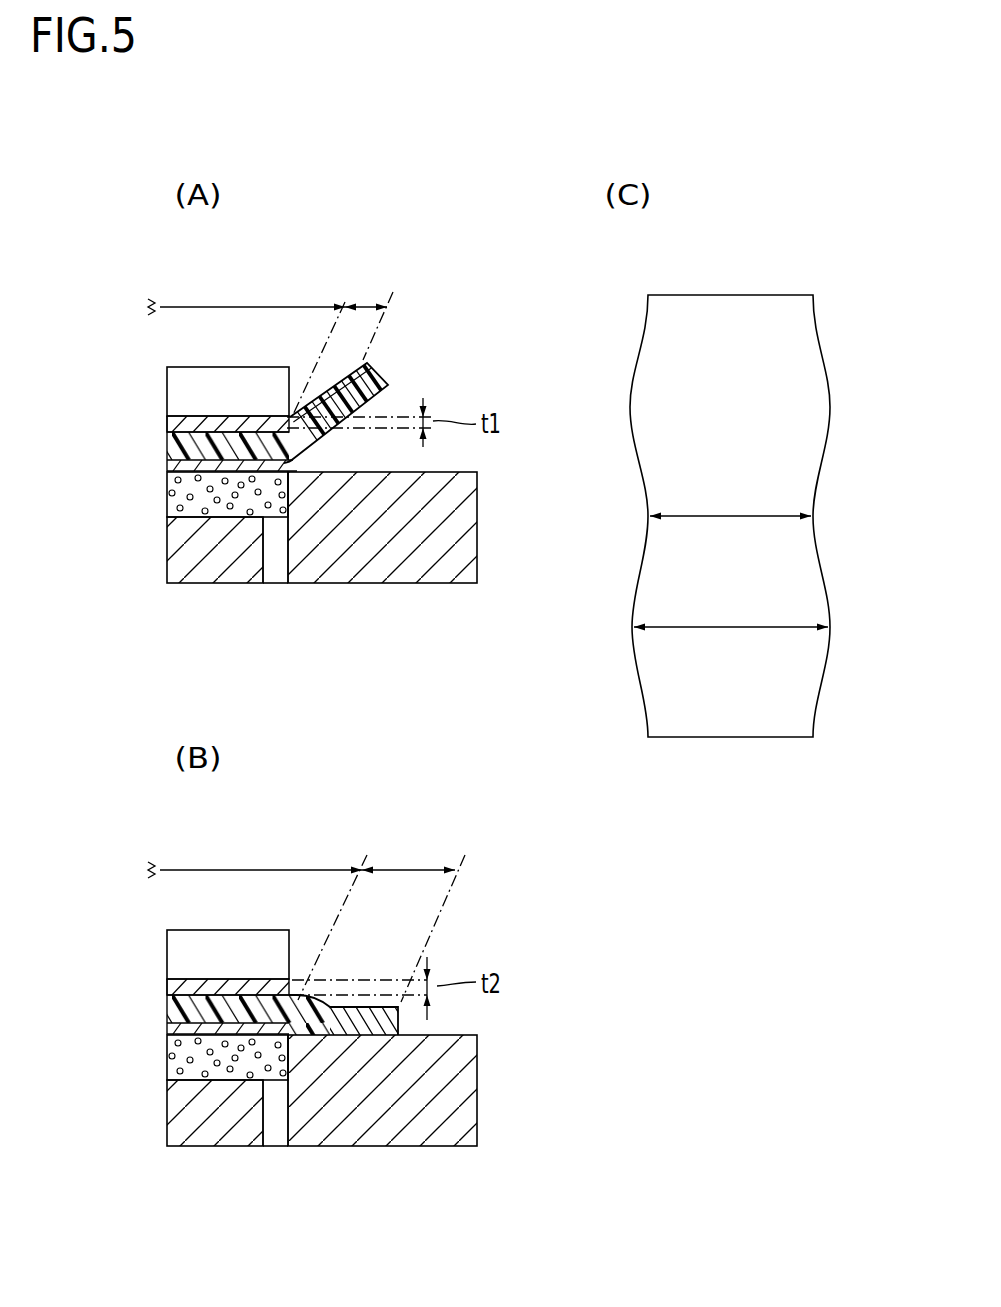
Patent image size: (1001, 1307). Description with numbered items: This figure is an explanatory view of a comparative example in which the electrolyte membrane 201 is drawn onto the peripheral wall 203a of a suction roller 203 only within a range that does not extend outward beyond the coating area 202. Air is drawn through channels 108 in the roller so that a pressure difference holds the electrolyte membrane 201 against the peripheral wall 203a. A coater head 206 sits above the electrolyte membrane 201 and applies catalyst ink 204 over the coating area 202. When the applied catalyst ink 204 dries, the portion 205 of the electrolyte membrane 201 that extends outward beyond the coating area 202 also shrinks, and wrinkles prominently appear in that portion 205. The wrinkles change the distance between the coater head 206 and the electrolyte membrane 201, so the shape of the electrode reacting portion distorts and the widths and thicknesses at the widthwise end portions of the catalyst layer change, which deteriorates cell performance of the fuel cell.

The channels 108 is at (272, 574).
The electrolyte membrane 201 is at (176, 452).
The coating area 202 is at (214, 305).
The suction roller 203 is at (437, 577).
The peripheral wall 203a is at (253, 470).
The catalyst ink 204 is at (170, 421).
The portion extending outward beyond the coating area 205 is at (366, 305).
The coater head 206 is at (219, 382).